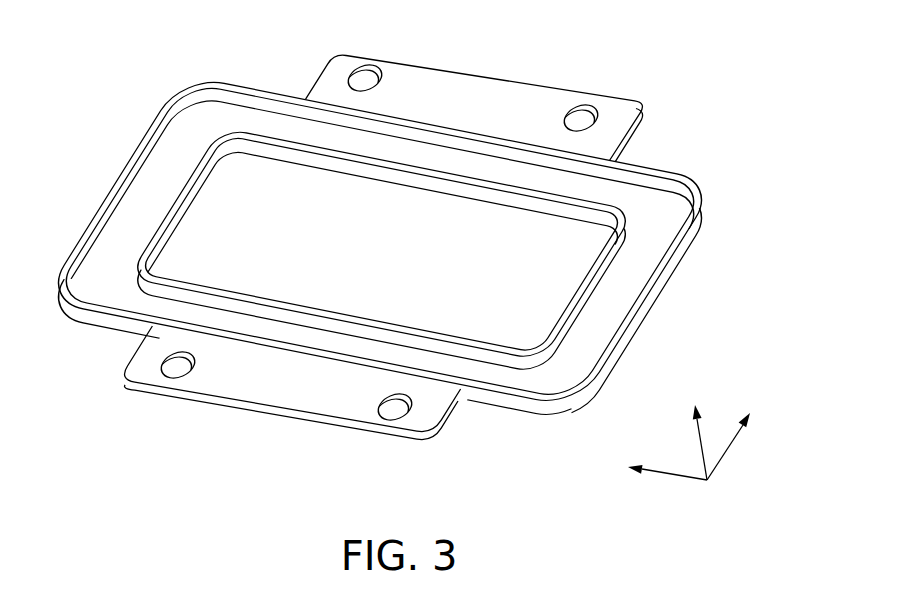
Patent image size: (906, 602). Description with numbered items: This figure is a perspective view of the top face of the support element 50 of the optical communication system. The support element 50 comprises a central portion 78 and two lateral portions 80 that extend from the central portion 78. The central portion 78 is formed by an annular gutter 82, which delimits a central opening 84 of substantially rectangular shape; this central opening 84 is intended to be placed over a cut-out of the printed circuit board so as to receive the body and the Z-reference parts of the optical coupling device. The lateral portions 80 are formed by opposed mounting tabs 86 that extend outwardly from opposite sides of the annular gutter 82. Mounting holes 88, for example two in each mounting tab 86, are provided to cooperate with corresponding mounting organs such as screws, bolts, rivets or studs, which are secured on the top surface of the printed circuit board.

The support element 50 is at (748, 141).
The central portion 78 is at (100, 131).
The lateral portions 80 is at (572, 66).
The annular gutter 82 is at (105, 266).
The central opening 84 is at (253, 172).
The mounting tabs 86 is at (467, 98).
The mounting holes 88 is at (366, 74).